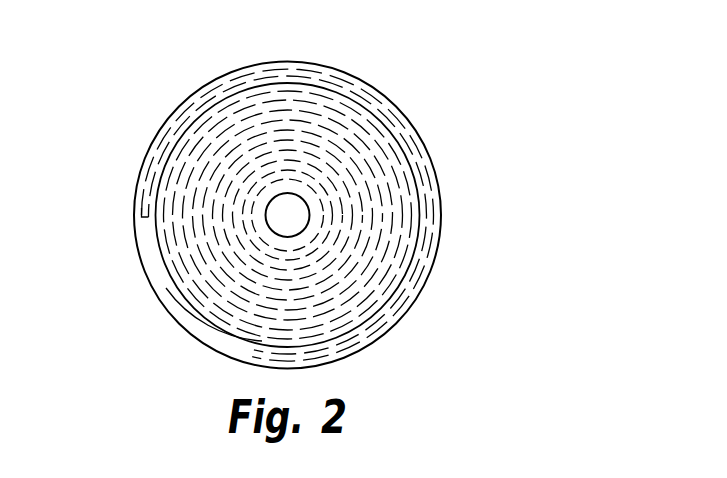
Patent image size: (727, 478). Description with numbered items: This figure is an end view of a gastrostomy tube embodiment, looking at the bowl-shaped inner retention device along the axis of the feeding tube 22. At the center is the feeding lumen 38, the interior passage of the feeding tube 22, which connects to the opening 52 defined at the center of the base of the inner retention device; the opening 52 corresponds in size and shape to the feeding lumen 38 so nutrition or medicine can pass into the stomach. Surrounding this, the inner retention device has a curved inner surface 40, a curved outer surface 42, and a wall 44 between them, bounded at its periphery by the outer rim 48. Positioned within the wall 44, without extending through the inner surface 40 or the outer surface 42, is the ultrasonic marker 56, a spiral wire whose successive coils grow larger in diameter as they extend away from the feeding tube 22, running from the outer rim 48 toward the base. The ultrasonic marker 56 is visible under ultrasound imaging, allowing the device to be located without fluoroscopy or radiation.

The feeding tube 22 is at (440, 263).
The feeding lumen 38 is at (304, 192).
The inner surface 40 is at (177, 143).
The outer surface 42 is at (338, 67).
The wall 44 is at (305, 72).
The outer rim 48 is at (433, 177).
The opening 52 is at (262, 221).
The ultrasonic marker 56 is at (152, 170).